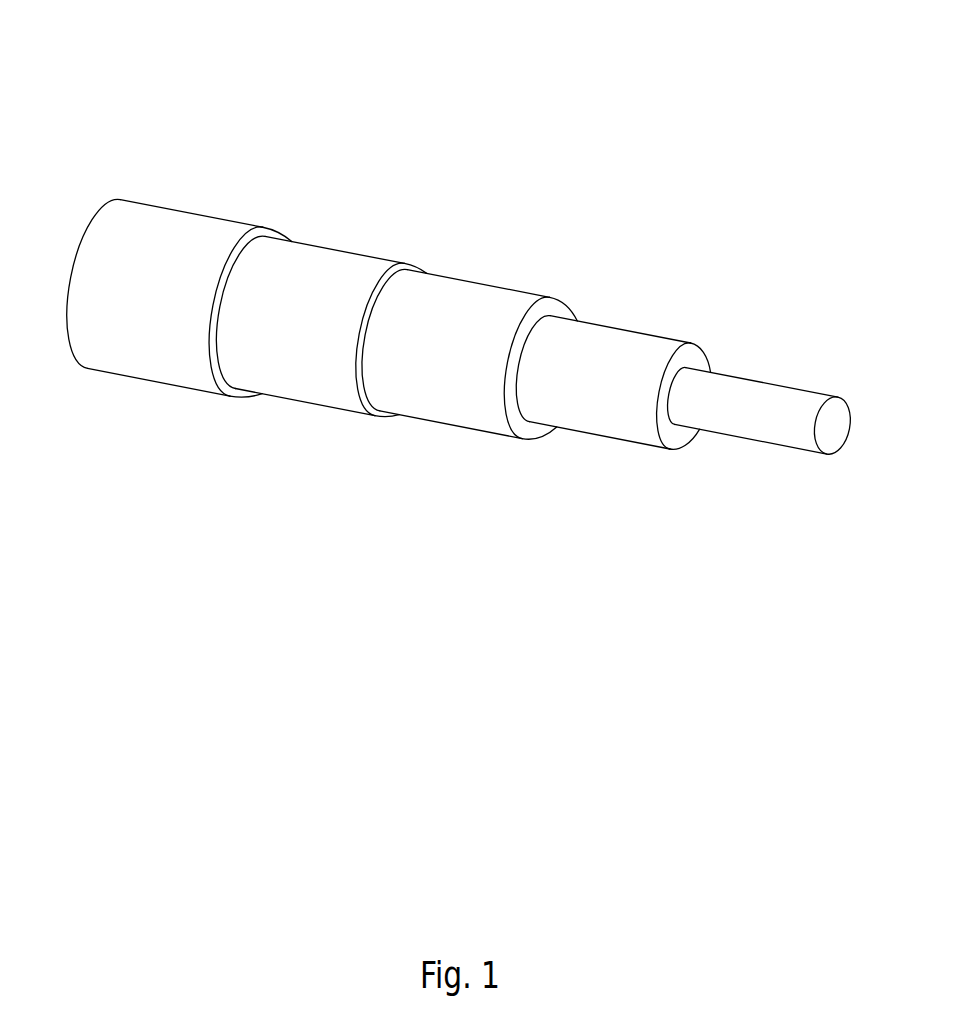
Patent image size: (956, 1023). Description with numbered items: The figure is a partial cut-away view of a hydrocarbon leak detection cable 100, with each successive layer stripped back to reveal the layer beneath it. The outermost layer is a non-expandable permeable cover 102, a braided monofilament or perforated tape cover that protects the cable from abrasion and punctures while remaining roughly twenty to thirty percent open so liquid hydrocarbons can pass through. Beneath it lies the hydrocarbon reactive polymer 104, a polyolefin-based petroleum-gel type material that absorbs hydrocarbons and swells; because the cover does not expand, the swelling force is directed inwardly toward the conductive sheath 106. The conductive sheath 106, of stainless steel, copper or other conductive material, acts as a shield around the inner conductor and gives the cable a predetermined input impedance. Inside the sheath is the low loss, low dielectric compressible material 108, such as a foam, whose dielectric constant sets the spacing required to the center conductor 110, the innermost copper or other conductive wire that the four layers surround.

The hydrocarbon leak detection cable 100 is at (450, 286).
The non-expandable permeable cover 102 is at (137, 355).
The hydrocarbon reactive polymer 104 is at (337, 272).
The conductive sheath 106 is at (437, 410).
The low loss, low dielectric compressible material 108 is at (640, 348).
The center conductor 110 is at (753, 425).